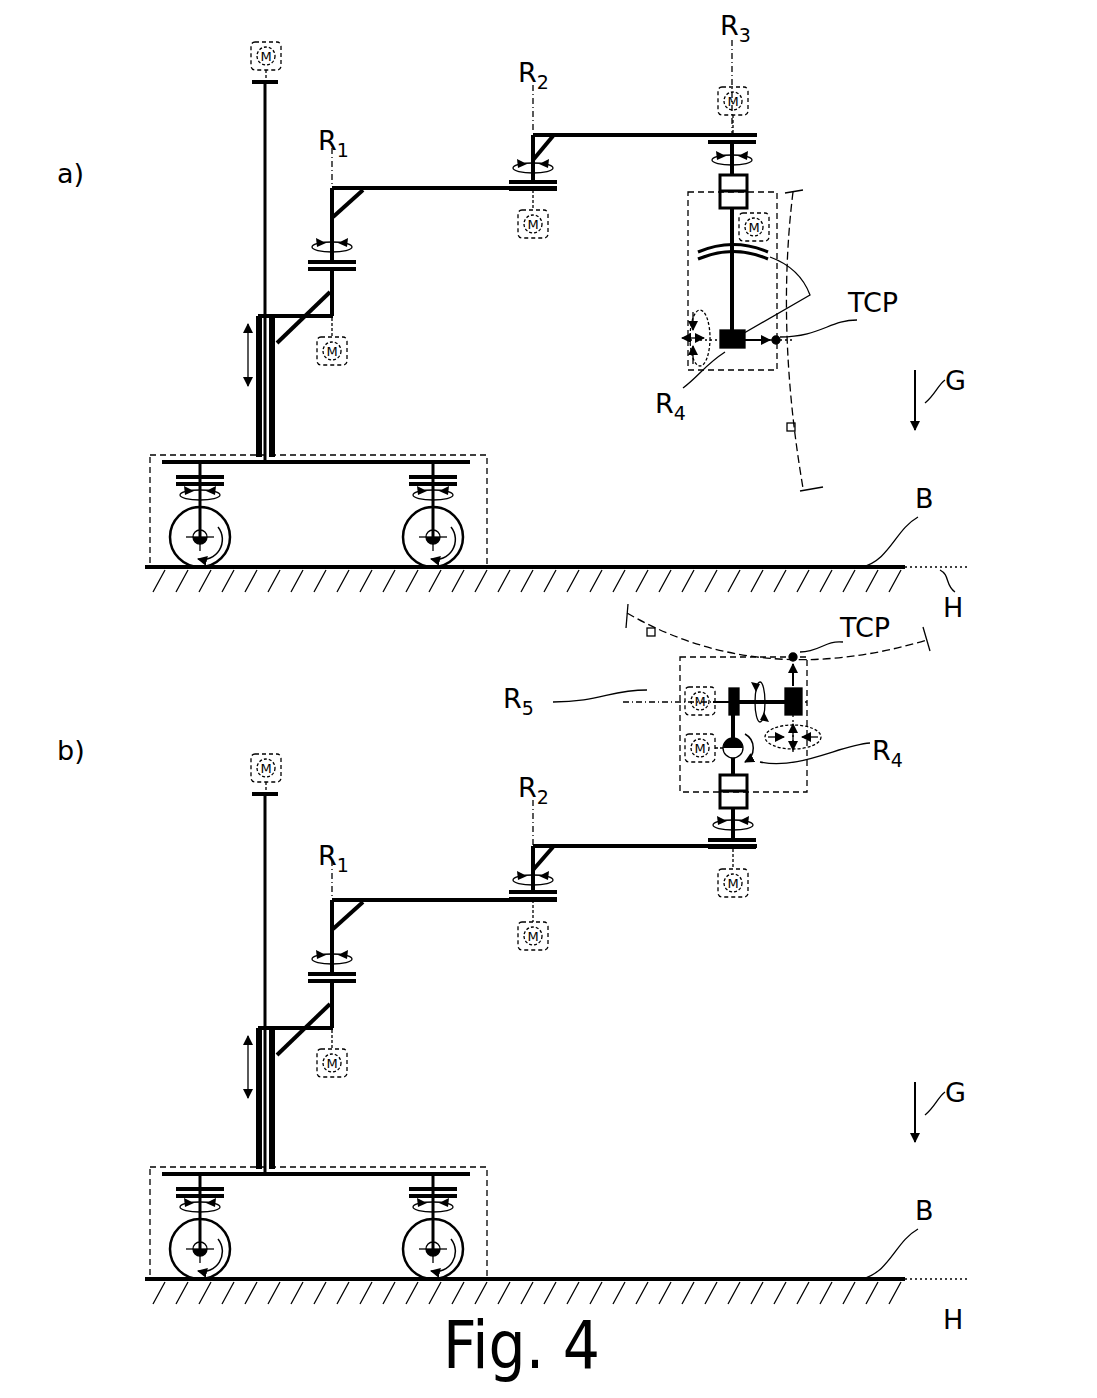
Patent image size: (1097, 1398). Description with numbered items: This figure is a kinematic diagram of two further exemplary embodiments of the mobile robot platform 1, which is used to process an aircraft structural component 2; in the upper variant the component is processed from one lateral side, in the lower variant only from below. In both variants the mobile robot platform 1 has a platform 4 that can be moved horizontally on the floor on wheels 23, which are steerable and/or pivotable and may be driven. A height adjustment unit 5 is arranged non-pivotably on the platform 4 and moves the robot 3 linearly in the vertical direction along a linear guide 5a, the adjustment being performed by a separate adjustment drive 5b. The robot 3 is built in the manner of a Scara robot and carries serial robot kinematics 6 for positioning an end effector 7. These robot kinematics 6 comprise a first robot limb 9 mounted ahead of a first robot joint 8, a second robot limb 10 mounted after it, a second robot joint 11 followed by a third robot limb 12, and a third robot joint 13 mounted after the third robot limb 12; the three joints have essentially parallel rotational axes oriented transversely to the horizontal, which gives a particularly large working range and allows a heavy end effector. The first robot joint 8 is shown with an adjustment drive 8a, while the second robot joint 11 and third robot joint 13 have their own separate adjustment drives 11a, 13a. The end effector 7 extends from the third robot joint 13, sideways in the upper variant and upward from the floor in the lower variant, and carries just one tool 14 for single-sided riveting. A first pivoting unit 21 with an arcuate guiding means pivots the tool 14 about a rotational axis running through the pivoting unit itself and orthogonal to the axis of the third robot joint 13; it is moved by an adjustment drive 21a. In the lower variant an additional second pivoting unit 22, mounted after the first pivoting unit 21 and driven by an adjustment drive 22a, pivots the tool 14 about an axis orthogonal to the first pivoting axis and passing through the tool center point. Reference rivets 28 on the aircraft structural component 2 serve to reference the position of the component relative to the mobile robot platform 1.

The mobile robot platform 1 is at (175, 145).
The aircraft structural component 2 is at (808, 455).
The robot 3 is at (320, 190).
The platform 4 is at (148, 487).
The height adjustment unit 5 is at (202, 380).
The linear guide 5a is at (250, 313).
The adjustment drive 5b is at (282, 62).
The robot kinematics 6 is at (490, 95).
The end effector 7 is at (777, 192).
The first robot joint 8 is at (357, 268).
The first joint motor 8a is at (347, 352).
The first robot limb 9 is at (337, 300).
The second robot limb 10 is at (412, 188).
The second robot joint 11 is at (557, 185).
The adjustment drive 11a is at (549, 222).
The third robot limb 12 is at (597, 135).
The third robot joint 13 is at (757, 138).
The adjustment drive 13a is at (748, 101).
The tool 14 is at (757, 357).
The first pivoting unit 21 is at (706, 246).
The adjustment drive 21a is at (690, 765).
The second pivoting unit 22 is at (737, 690).
The adjustment drive 22a is at (690, 722).
The wheels 23 is at (392, 522).
The reference rivets 28 is at (790, 430).